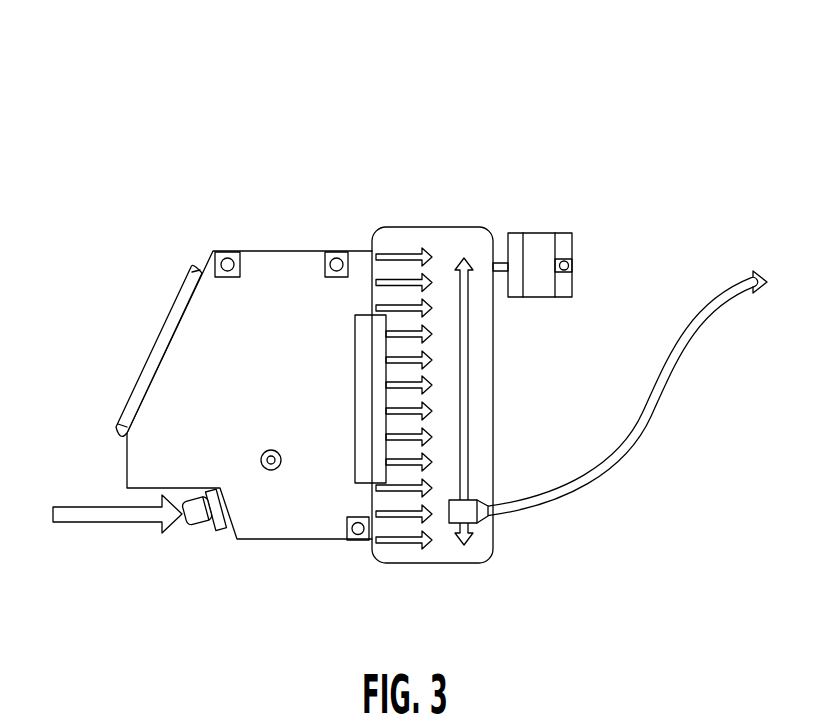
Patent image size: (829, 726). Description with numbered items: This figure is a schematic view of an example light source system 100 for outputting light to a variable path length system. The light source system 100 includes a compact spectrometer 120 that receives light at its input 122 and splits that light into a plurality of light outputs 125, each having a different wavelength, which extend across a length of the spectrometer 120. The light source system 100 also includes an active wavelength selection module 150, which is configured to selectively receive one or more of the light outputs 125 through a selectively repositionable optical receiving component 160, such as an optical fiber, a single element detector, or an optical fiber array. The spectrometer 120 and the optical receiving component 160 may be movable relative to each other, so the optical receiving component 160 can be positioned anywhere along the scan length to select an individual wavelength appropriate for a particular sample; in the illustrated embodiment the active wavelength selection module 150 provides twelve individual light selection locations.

The light source system 100 is at (670, 85).
The spectrometer 120 is at (282, 259).
The input 122 is at (200, 517).
The light outputs 125 is at (380, 257).
The active wavelength selection module 150 is at (457, 227).
The optical receiving component 160 is at (475, 512).